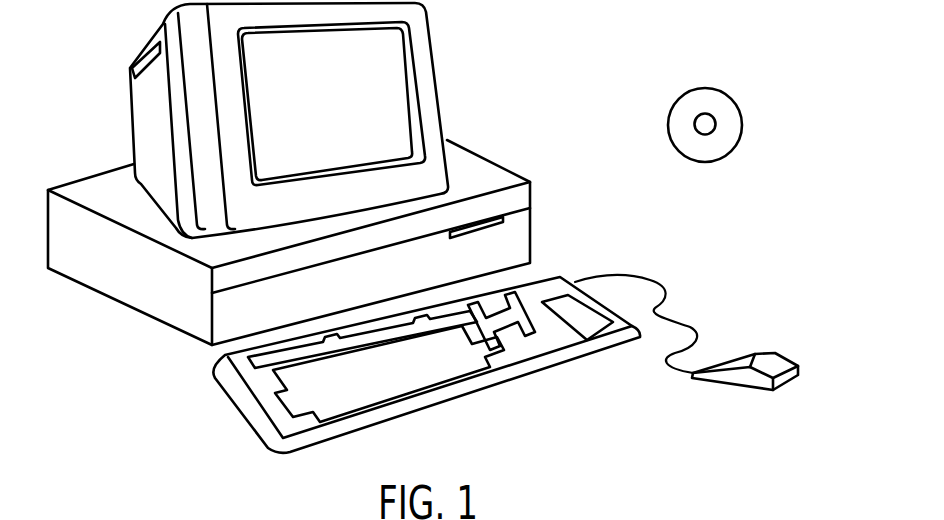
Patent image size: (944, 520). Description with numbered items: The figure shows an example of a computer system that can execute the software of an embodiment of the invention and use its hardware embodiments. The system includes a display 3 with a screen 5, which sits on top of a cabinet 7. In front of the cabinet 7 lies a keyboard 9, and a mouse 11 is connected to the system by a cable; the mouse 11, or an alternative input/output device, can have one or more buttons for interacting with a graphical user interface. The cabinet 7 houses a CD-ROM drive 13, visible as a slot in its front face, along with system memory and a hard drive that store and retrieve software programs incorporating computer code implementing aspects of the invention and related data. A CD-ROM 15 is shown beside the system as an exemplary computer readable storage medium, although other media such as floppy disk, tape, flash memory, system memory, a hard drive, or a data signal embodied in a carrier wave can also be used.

The display 3 is at (443, 100).
The screen 5 is at (385, 57).
The cabinet 7 is at (165, 327).
The keyboard 9 is at (458, 400).
The mouse 11 is at (775, 352).
The CD-ROM drive 13 is at (503, 219).
The CD-ROM 15 is at (732, 95).